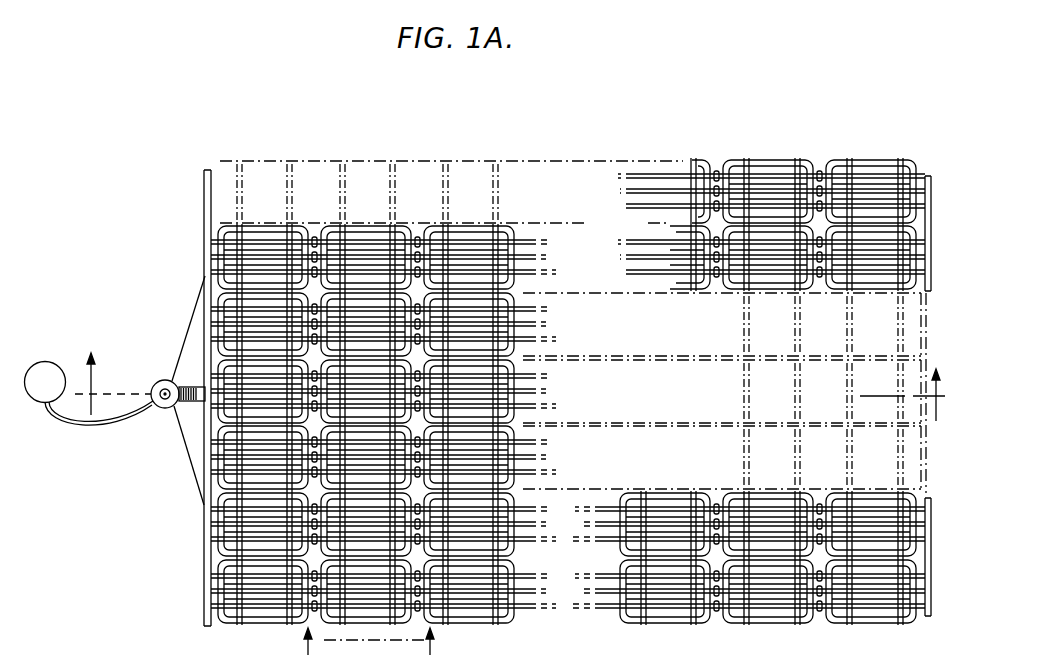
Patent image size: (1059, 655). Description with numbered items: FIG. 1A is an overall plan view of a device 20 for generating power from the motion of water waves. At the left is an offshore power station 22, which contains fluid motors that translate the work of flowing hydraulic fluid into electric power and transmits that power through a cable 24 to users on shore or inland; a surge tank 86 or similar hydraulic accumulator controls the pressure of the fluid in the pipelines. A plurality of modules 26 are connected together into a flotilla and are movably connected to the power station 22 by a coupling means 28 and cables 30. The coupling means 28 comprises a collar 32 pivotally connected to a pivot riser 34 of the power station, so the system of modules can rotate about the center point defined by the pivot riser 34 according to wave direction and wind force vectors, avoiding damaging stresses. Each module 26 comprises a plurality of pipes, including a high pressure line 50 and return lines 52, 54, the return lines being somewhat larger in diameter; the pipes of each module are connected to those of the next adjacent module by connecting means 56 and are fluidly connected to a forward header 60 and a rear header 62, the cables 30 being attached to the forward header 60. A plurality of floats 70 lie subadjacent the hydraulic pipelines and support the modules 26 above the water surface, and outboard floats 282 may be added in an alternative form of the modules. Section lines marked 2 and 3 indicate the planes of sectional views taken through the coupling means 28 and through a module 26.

The device 20 is at (580, 130).
The offshore power station 22 is at (158, 400).
The cable 24 is at (68, 425).
The modules 26 is at (355, 210).
The coupling means 28 is at (181, 366).
The cables 30 is at (181, 454).
The collar 32 is at (146, 379).
The pivot riser 34 is at (183, 394).
The high pressure line 50 is at (254, 590).
The return line 52 is at (212, 604).
The return line 54 is at (251, 568).
The connecting means 56 is at (307, 612).
The forward header 60 is at (196, 182).
The rear header 62 is at (921, 170).
The floats 70 is at (264, 225).
The surge tank 86 is at (42, 356).
The outboard floats 282 is at (749, 613).
The section line 2- 2 is at (510, 380).
The section line 3- 3 is at (361, 638).